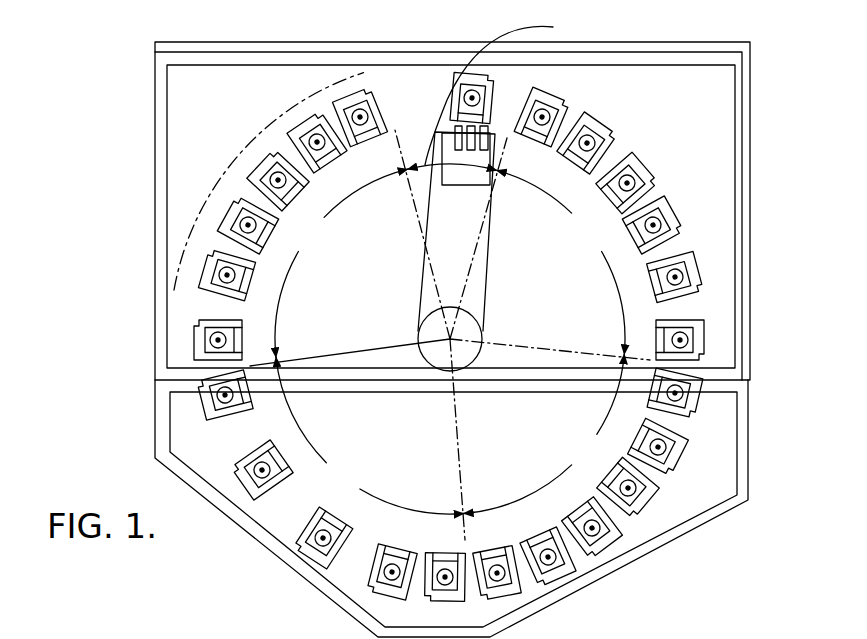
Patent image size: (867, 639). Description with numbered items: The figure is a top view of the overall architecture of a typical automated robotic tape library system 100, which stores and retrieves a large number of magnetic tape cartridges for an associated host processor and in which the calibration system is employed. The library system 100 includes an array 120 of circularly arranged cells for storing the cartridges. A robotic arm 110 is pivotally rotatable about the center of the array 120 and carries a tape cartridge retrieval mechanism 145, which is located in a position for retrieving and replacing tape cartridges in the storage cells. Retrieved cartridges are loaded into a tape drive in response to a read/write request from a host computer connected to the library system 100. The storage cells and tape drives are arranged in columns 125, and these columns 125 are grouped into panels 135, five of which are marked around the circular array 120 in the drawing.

The automated robotic tape library system 100 is at (129, 58).
The robotic arm 110 is at (488, 279).
The array of circularly arranged cells 120 is at (215, 197).
The columns 125 is at (262, 158).
The panels 135 is at (413, 150).
The tape cartridge retrieval mechanism 145 is at (468, 145).